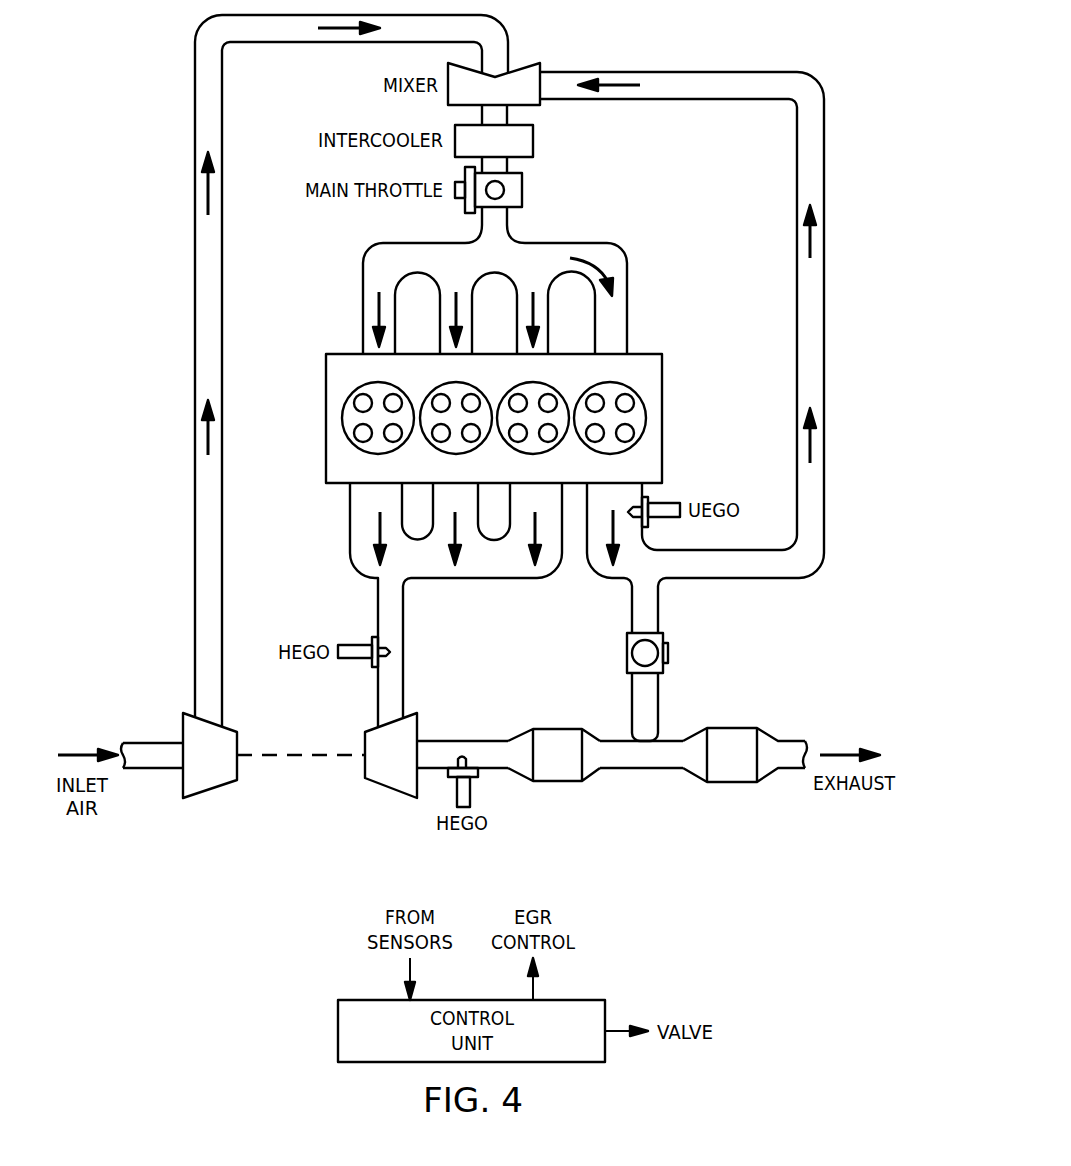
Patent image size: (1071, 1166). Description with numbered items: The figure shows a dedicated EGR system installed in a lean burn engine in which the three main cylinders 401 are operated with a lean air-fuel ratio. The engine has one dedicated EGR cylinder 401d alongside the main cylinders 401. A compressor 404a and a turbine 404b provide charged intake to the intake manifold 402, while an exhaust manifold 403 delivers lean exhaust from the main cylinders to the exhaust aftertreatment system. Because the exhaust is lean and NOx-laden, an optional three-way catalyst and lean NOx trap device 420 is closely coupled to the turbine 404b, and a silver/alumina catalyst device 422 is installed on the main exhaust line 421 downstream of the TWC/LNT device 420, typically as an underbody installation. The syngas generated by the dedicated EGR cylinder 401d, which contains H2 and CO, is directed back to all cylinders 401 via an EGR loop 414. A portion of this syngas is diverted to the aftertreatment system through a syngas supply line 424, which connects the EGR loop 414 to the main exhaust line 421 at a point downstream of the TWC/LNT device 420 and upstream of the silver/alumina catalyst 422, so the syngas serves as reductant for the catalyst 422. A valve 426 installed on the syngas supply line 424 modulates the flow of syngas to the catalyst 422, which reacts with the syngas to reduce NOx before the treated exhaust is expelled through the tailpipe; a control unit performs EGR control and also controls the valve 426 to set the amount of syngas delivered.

The main cylinders 401 is at (328, 421).
The dedicated EGR cylinder 401d is at (645, 405).
The intake manifold 402 is at (582, 243).
The exhaust manifold 403 is at (475, 578).
The compressor 404a is at (210, 787).
The turbine 404b is at (390, 788).
The EGR loop 414 is at (824, 318).
The TWC/LNT device 420 is at (556, 783).
The main exhaust line 421 is at (462, 741).
The silver/alumina catalyst device 422 is at (732, 782).
The syngas supply line 424 is at (658, 690).
The valve 426 is at (670, 655).